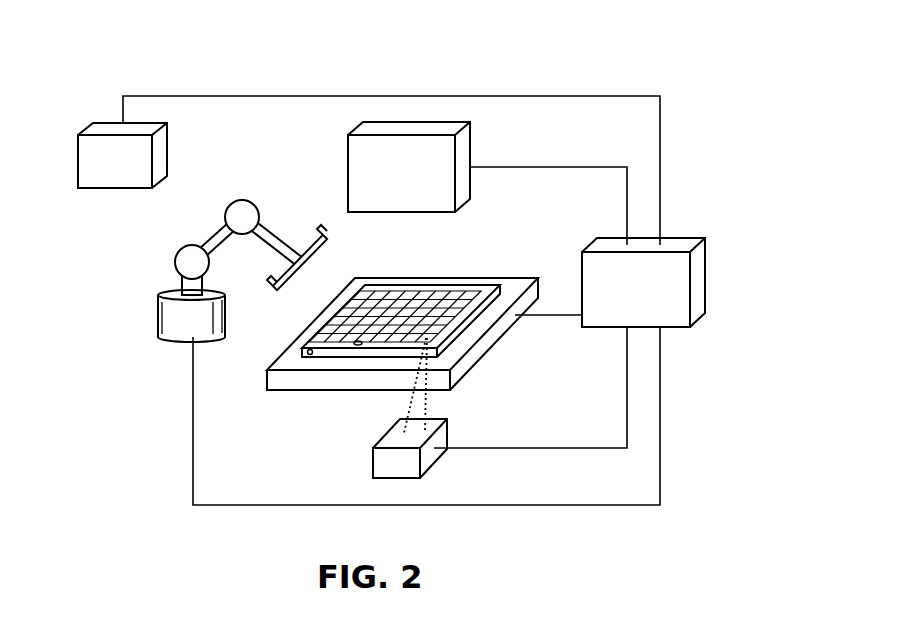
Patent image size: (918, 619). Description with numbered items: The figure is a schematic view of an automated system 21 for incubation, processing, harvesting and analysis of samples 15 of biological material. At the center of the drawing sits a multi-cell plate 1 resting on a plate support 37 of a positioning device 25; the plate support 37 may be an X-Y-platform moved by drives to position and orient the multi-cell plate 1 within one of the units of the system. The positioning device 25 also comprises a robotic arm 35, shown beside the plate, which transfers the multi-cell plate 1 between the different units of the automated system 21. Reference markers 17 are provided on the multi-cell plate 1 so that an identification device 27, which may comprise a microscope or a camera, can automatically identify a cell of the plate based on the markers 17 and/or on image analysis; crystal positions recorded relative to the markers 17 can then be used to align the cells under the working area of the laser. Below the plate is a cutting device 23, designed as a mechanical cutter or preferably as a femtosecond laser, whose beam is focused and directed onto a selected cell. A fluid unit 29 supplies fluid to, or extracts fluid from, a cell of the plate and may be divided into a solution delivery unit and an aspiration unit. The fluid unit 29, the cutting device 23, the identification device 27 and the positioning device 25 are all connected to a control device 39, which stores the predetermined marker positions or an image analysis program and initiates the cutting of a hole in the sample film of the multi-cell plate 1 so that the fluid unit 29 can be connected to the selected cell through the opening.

The multi-cell plate 1 is at (493, 272).
The sample 15 is at (358, 346).
The reference marker 17 is at (312, 354).
The automated system 21 is at (654, 86).
The cutting device 23 is at (432, 460).
The positioning device 25 is at (205, 360).
The identification device 27 is at (347, 158).
The fluid unit 29 is at (102, 190).
The robotic arm 35 is at (159, 317).
The plate support 37 is at (468, 357).
The control device 39 is at (677, 330).